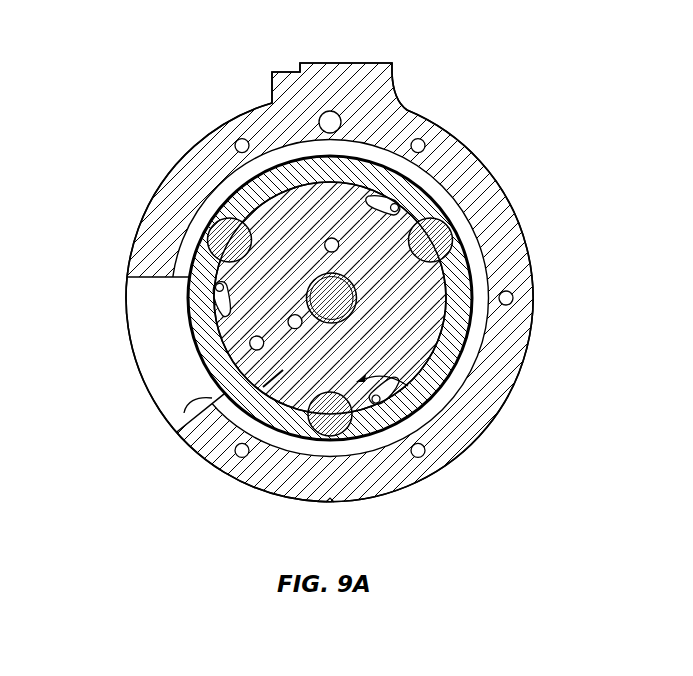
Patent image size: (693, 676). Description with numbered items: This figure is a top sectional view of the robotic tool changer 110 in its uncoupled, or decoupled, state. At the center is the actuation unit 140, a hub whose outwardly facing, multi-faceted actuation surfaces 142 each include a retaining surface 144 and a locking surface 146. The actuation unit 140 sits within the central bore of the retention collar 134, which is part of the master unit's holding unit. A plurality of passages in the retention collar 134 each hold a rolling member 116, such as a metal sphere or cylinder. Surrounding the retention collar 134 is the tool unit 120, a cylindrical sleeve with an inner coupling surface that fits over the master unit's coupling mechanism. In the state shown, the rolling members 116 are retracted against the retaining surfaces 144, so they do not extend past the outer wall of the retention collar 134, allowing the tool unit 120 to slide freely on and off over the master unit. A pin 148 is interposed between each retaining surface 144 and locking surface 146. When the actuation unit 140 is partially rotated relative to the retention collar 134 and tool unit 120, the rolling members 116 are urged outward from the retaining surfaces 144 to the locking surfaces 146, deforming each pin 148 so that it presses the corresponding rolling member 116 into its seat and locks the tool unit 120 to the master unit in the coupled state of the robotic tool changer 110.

The robotic tool changer 110 is at (505, 104).
The rolling member 116 is at (440, 237).
The tool unit 120 is at (503, 352).
The retention collar 134 is at (405, 410).
The actuation unit 140 is at (232, 425).
The multi-faceted actuation surface 142 is at (423, 379).
The retaining surface 144 is at (440, 280).
The locking surface 146 is at (373, 178).
The pin 148 is at (392, 200).